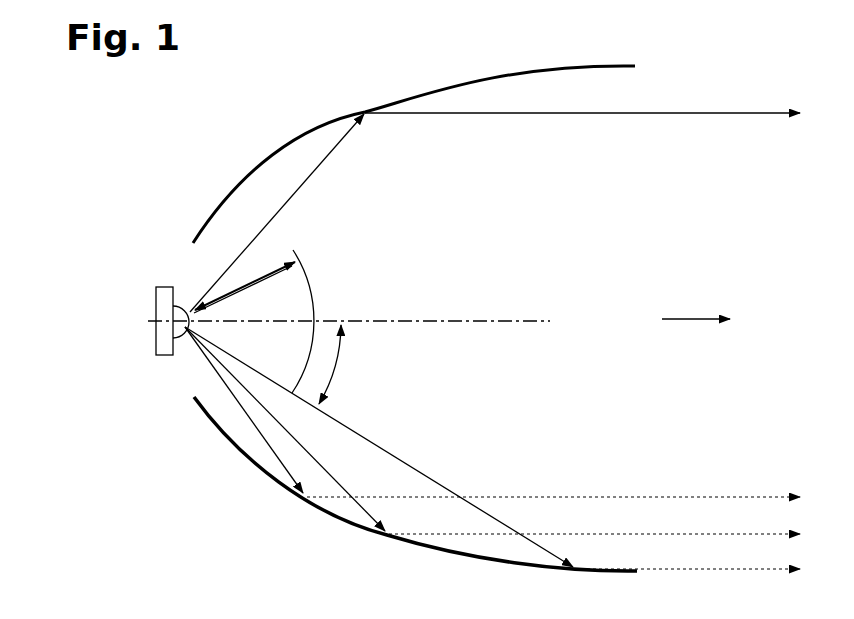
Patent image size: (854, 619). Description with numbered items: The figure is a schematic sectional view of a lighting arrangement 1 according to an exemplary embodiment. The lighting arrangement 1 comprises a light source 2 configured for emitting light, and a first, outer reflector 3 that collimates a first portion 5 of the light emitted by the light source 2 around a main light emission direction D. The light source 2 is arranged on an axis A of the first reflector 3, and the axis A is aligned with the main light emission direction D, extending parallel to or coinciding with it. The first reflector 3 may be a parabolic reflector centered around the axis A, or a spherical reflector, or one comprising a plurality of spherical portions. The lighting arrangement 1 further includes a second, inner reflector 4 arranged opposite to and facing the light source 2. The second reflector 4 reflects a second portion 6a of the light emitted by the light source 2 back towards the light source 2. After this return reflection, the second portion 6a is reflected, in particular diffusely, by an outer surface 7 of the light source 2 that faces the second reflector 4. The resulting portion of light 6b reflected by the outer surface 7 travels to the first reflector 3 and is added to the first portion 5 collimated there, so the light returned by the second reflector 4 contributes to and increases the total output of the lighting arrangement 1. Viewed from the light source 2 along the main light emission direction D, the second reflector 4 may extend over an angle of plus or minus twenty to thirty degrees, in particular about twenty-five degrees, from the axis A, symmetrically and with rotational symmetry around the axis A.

The lighting arrangement 1 is at (187, 141).
The light source 2 is at (146, 343).
The first reflector 3 is at (307, 129).
The second reflector 4 is at (319, 283).
The first portion of the light 5 is at (424, 467).
The second portion of the light 6a is at (248, 272).
The portion of light reflected by the outer surface 6b is at (321, 170).
The outer surface of the light source 7 is at (189, 326).
The axis A is at (363, 321).
The main light emission direction D is at (696, 305).